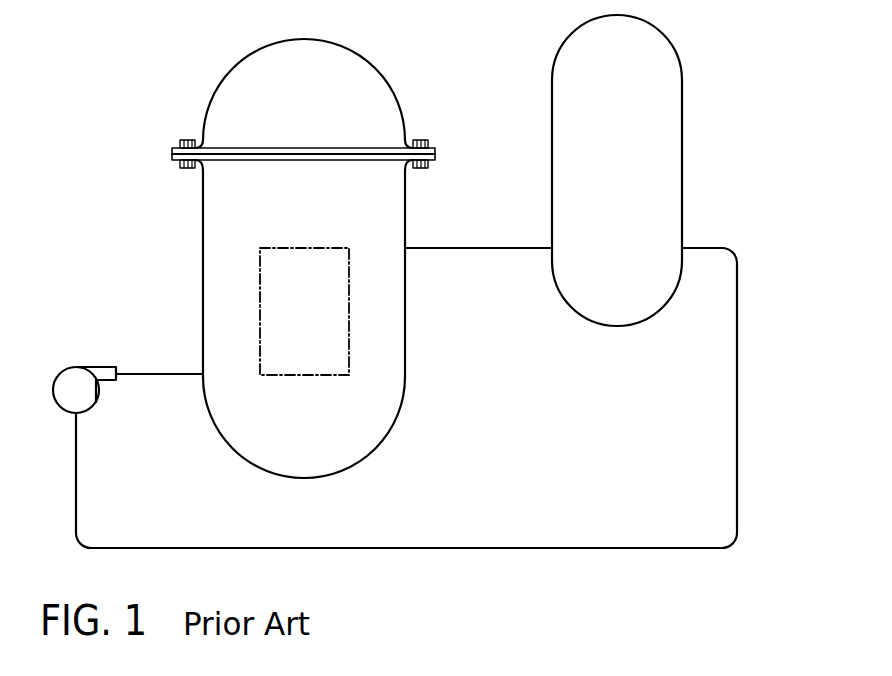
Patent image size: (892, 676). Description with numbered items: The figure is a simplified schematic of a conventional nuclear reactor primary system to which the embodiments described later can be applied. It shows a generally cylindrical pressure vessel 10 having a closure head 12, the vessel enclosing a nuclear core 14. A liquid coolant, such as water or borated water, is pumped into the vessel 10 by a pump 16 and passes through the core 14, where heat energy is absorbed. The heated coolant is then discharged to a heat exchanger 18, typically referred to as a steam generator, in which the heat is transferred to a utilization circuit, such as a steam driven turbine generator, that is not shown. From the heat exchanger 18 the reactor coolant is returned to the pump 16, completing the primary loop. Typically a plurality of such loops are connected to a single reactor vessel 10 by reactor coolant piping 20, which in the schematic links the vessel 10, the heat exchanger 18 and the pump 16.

The pressure vessel 10 is at (317, 322).
The closure head 12 is at (212, 100).
The nuclear core 14 is at (259, 300).
The pump 16 is at (72, 368).
The heat exchanger 18 is at (683, 113).
The reactor coolant piping 20 is at (738, 481).